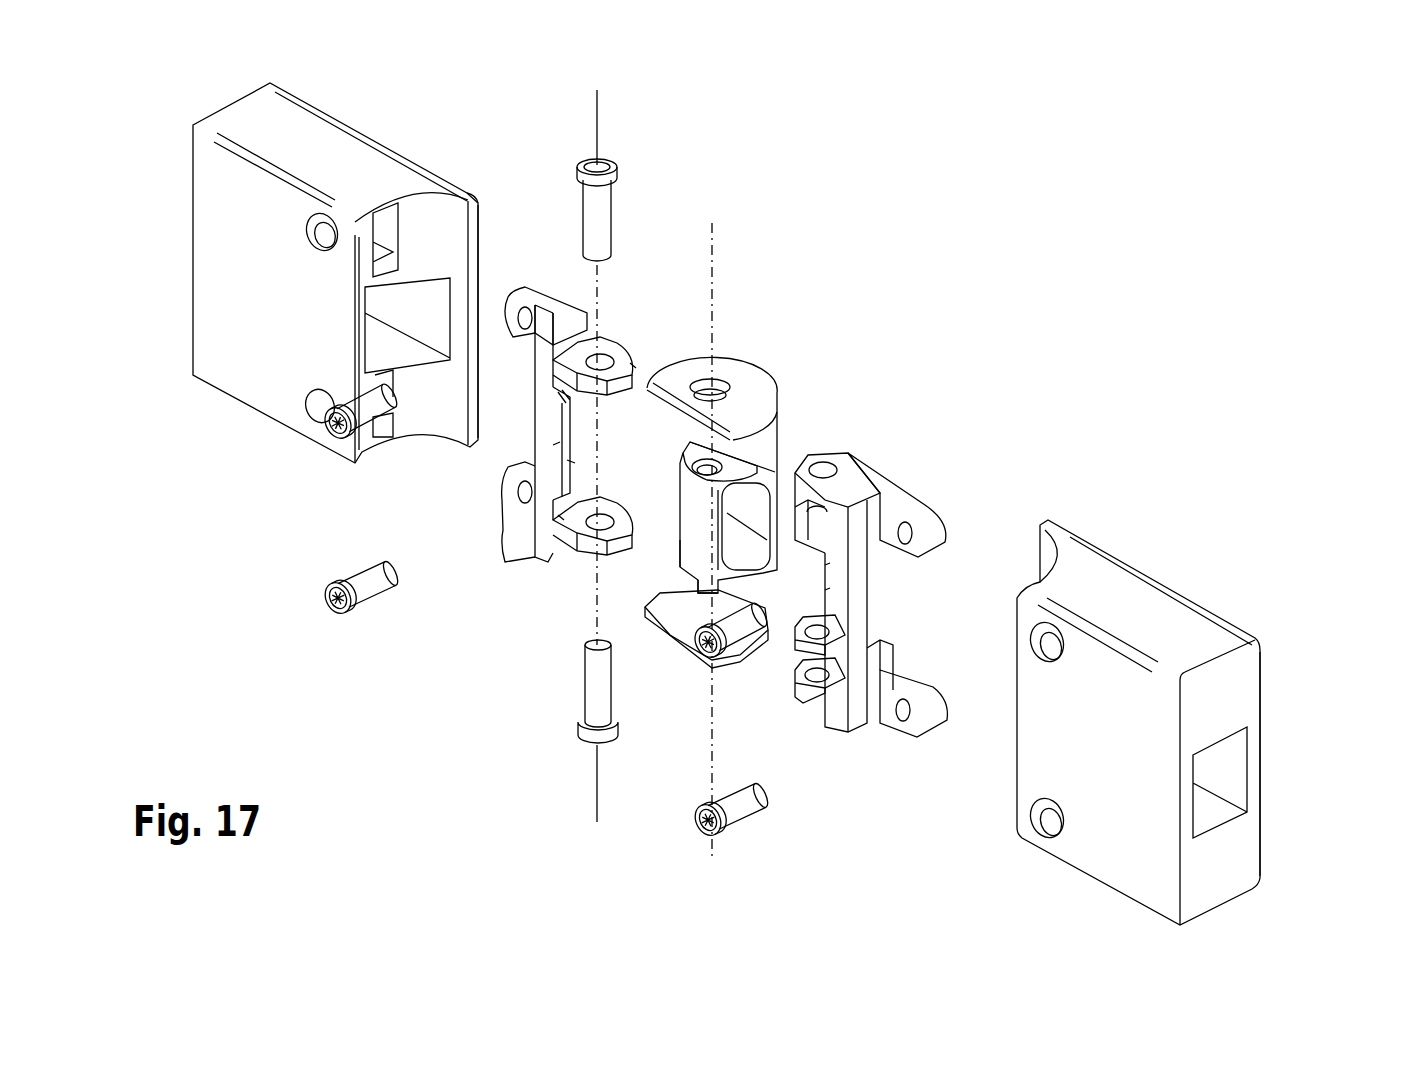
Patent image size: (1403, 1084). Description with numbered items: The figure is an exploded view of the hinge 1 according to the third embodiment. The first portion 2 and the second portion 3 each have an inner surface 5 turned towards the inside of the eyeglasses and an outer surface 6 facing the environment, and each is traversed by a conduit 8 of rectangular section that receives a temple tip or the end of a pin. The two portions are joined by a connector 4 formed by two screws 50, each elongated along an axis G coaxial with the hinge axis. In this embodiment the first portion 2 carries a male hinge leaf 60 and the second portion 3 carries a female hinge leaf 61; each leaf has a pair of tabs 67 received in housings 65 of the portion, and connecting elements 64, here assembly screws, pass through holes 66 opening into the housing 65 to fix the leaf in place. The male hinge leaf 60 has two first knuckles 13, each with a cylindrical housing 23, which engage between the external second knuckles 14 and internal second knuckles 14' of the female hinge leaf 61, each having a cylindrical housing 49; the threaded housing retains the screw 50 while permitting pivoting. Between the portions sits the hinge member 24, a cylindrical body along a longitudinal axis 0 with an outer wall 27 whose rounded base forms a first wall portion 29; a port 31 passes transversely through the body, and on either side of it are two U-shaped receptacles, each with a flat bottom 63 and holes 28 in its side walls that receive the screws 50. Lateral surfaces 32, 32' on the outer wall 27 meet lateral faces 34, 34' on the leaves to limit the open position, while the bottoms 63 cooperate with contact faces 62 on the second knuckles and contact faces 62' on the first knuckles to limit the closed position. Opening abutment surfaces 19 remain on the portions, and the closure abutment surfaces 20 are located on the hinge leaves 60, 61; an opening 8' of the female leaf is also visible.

The hinge 1 is at (357, 707).
The first portion 2 is at (339, 178).
The second portion 3 is at (1150, 622).
The connector 4 is at (590, 694).
The inner surface 5 is at (258, 346).
The outer surface 6 is at (414, 158).
The conduit 8 is at (841, 558).
The opening 8' is at (919, 660).
The first knuckle 13 is at (601, 354).
The second knuckle (external) 14 is at (821, 564).
The second knuckle (internal) 14' is at (822, 590).
The opening abutment surface 19 is at (480, 205).
The closure abutment surface 20 is at (568, 443).
The cylindrical housing 23 is at (607, 358).
The hinge member 24 is at (739, 375).
The outer wall 27 is at (765, 357).
The hole 28 is at (706, 462).
The first wall portion 29 is at (682, 543).
The port 31 is at (763, 516).
The lateral surface 32 is at (662, 531).
The lateral surface 32' is at (773, 524).
The lateral face 34 is at (578, 504).
The lateral face 34' is at (876, 668).
The cylindrical housing 49 is at (830, 462).
The screw 50 is at (605, 200).
The male hinge leaf 60 is at (547, 560).
The female hinge leaf 61 is at (890, 492).
The contact face 62 is at (814, 435).
The contact face 62' is at (630, 399).
The bottom 63 is at (775, 470).
The connecting element 64 is at (377, 590).
The housing 65 is at (384, 223).
The hole 66 is at (317, 233).
The tab 67 is at (507, 490).
The axis G is at (598, 131).
The longitudinal axis 0 is at (712, 279).